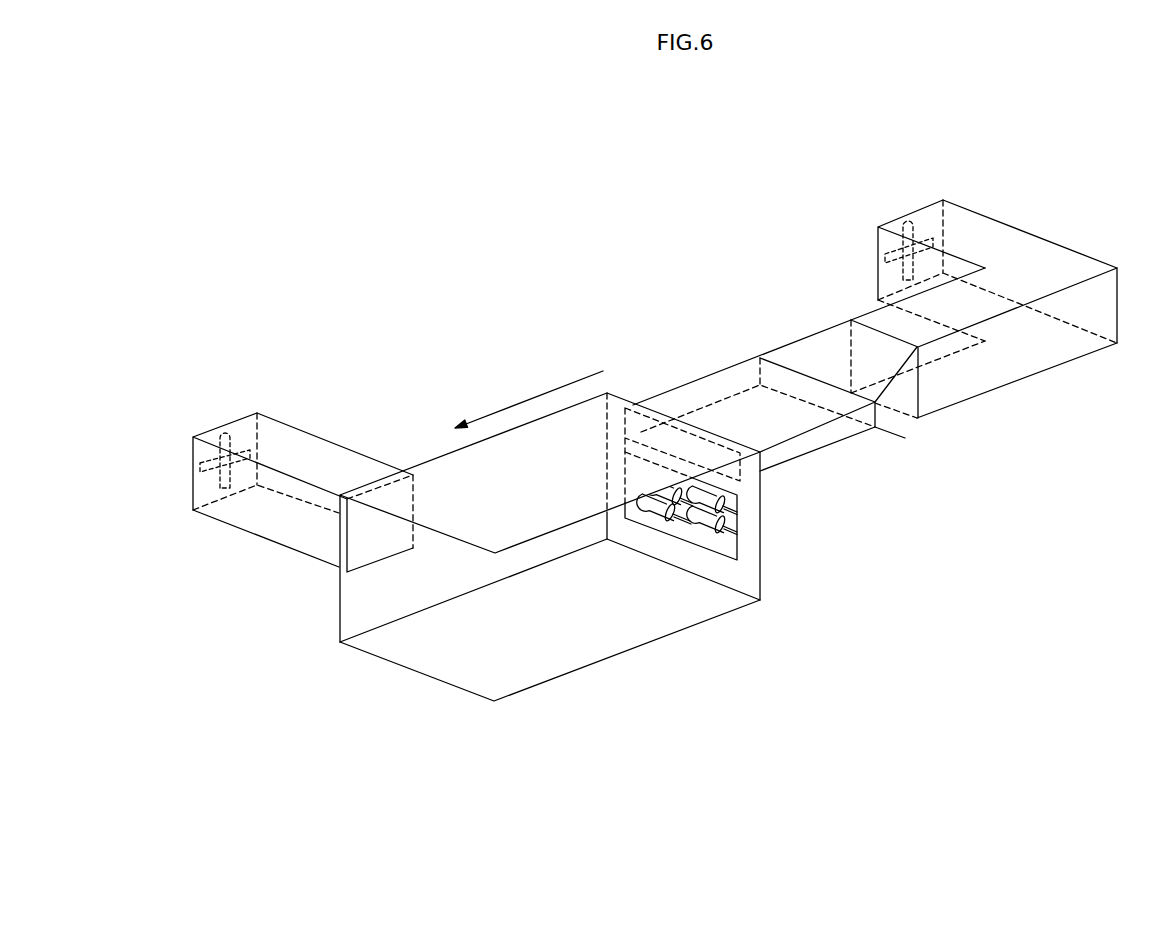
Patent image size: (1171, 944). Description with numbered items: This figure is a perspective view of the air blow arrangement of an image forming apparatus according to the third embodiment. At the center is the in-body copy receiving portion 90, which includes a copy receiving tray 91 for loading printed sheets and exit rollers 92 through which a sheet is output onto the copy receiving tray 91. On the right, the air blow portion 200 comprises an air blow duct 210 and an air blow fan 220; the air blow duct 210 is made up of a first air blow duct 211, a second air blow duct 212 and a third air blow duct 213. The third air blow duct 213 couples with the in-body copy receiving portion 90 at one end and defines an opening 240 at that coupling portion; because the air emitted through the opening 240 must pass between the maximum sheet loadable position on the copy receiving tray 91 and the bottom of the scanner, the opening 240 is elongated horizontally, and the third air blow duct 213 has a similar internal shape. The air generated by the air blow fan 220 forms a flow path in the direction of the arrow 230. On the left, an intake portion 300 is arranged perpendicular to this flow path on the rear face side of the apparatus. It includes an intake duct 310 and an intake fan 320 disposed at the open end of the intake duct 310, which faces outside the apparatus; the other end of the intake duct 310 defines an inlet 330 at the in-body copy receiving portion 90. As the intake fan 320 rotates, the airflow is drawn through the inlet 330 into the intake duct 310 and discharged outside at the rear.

The air blow portion 200 is at (681, 192).
The air blow duct 210 is at (1003, 523).
The first air blow duct 211 is at (958, 387).
The second air blow duct 212 is at (907, 423).
The third air blow duct 213 is at (808, 443).
The air blow fan 220 is at (878, 249).
The arrow 230 is at (526, 397).
The opening 240 is at (650, 432).
The intake portion 300 is at (260, 565).
The intake duct 310 is at (283, 437).
The intake fan 320 is at (221, 430).
The inlet 330 is at (406, 480).
The in-body copy receiving portion 90 is at (415, 698).
The copy receiving tray 91 is at (543, 660).
The exit rollers 92 is at (752, 532).